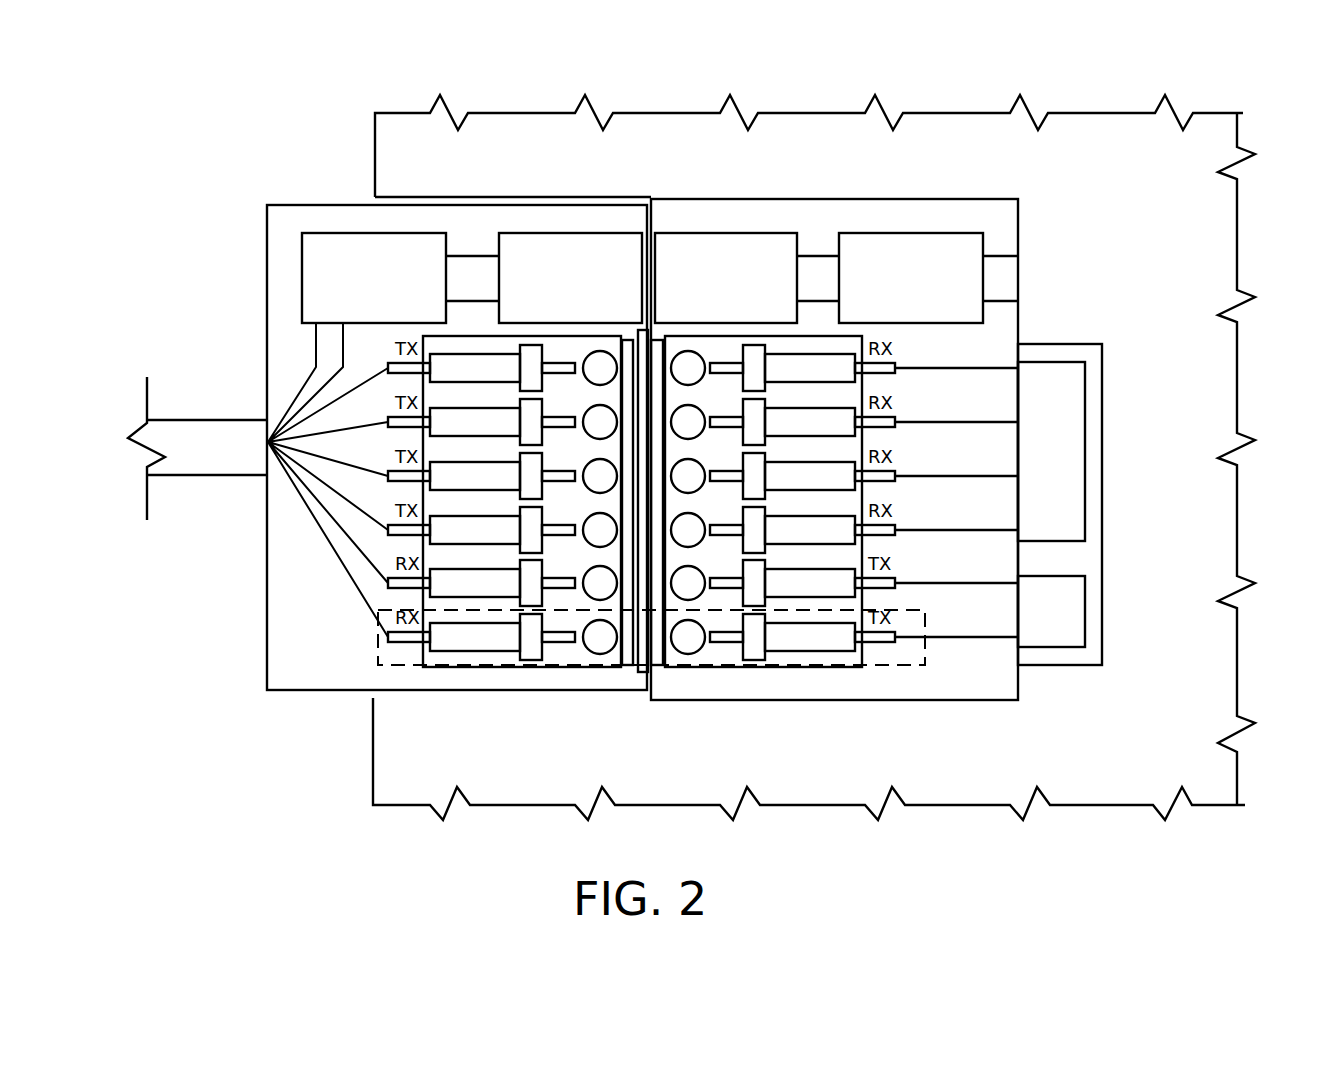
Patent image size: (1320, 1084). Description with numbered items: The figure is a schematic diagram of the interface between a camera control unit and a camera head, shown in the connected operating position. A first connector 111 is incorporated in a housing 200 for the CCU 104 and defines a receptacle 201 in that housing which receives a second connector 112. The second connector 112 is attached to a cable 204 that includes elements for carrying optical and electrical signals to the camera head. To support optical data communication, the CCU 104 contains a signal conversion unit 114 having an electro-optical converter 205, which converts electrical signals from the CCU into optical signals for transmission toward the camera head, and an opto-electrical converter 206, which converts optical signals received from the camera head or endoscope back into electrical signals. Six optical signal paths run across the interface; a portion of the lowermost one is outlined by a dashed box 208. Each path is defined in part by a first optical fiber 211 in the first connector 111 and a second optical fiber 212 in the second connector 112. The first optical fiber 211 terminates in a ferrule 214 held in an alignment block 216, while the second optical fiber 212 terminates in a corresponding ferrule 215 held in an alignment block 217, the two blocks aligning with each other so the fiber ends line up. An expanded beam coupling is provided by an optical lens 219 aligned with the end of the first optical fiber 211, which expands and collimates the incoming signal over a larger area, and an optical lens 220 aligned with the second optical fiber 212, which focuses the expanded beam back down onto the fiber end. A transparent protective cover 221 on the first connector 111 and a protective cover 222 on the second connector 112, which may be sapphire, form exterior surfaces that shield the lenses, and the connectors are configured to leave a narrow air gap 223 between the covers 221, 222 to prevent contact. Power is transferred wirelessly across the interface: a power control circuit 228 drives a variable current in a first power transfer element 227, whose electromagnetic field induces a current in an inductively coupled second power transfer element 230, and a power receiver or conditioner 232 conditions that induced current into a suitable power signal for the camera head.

The CCU 104 is at (1138, 199).
The first connector 111 is at (780, 198).
The second connector 112 is at (283, 205).
The signal conversion unit 114 is at (1105, 372).
The housing 200 is at (375, 163).
The receptacle 201 is at (478, 197).
The cable 204 is at (192, 418).
The electro-optical converter 205 is at (1085, 612).
The opto-electrical converter 206 is at (1085, 450).
The dashed box 208 is at (910, 670).
The first optical fiber 211 is at (905, 638).
The second optical fiber 212 is at (360, 602).
The ferrule 214 is at (828, 651).
The ferrule 215 is at (493, 653).
The alignment block 216 is at (800, 670).
The alignment block 217 is at (540, 668).
The optical lens 219 is at (690, 655).
The optical lens 220 is at (600, 655).
The protective cover 221 is at (655, 657).
The protective cover 222 is at (630, 655).
The air gap 223 is at (641, 660).
The first power transfer element 227 is at (726, 278).
The power control circuit 228 is at (911, 278).
The second power transfer element 230 is at (570, 278).
The power receiver or conditioner 232 is at (374, 278).